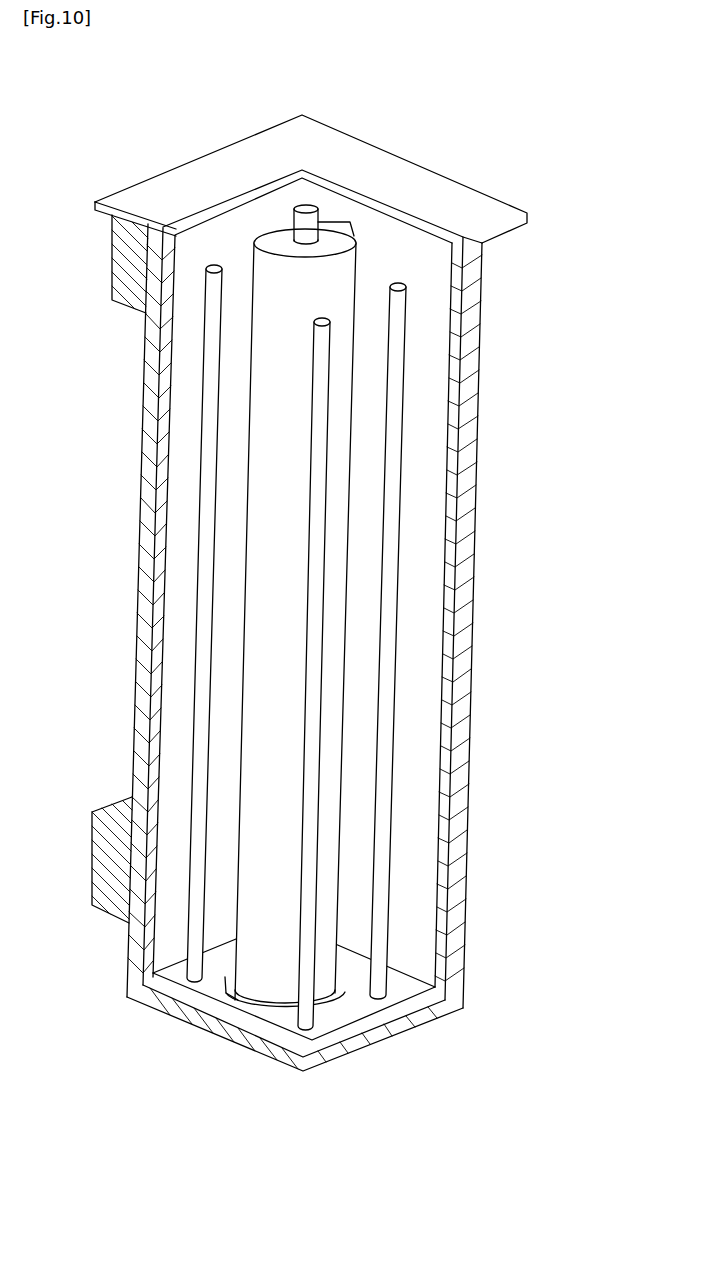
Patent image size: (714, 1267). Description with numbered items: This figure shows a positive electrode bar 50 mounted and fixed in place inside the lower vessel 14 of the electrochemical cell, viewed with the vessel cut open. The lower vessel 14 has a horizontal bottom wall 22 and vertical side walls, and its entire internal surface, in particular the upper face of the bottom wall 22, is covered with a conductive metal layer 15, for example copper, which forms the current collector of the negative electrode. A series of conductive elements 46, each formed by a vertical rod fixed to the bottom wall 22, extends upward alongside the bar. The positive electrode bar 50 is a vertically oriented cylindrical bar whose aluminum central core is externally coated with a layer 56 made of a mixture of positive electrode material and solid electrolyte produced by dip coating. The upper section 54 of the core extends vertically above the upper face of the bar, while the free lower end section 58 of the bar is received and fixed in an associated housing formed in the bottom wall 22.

The lower vessel 14 is at (503, 870).
The conductive metal layer 15 is at (193, 1030).
The bottom wall 22 is at (273, 1050).
The conductive elements 46 is at (210, 455).
The positive electrode bar 50 is at (270, 728).
The upper section of the central core 54 is at (272, 215).
The coating layer 56 is at (346, 203).
The free lower end section 58 is at (222, 952).